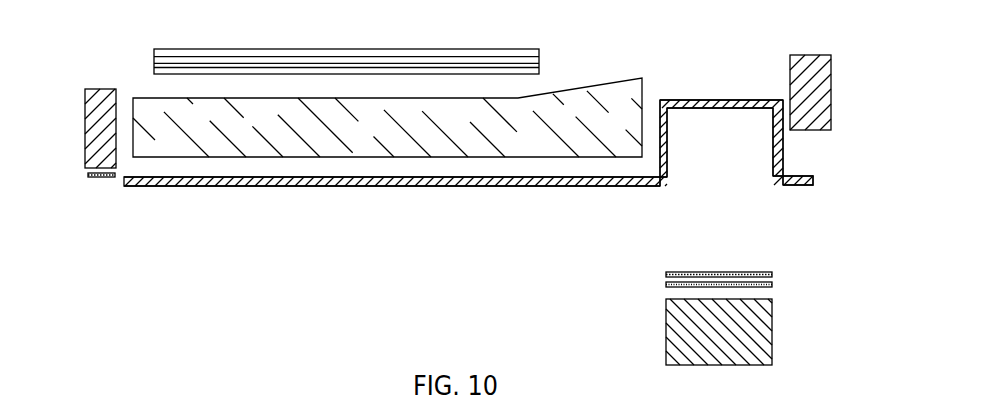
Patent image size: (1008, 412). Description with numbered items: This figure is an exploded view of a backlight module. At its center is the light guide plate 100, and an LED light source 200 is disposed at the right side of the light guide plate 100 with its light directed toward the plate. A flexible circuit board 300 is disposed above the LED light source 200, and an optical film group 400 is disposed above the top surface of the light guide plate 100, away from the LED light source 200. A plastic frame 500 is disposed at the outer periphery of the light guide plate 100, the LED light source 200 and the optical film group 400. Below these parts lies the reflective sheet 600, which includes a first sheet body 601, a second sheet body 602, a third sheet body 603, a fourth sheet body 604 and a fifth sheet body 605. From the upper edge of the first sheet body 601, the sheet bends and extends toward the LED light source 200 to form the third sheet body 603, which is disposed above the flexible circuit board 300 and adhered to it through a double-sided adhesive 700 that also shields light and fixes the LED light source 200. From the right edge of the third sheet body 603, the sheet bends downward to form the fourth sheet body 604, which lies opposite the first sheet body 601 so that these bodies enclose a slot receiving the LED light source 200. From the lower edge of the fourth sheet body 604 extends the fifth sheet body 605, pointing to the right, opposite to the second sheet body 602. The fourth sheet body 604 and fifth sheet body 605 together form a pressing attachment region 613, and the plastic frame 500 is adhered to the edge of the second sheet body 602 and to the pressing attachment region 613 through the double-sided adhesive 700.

The light guide plate 100 is at (630, 102).
The LED light source 200 is at (753, 330).
The flexible circuit board 300 is at (760, 291).
The optical film group 400 is at (293, 65).
The plastic frame 500 is at (110, 89).
The reflective sheet 600 is at (482, 152).
The first sheet body 601 is at (668, 113).
The second sheet body 602 is at (293, 186).
The third sheet body 603 is at (748, 100).
The fourth sheet body 604 is at (778, 164).
The fifth sheet body 605 is at (788, 187).
The pressing attachment region 613 is at (793, 168).
The double-sided adhesive 700 is at (105, 178).